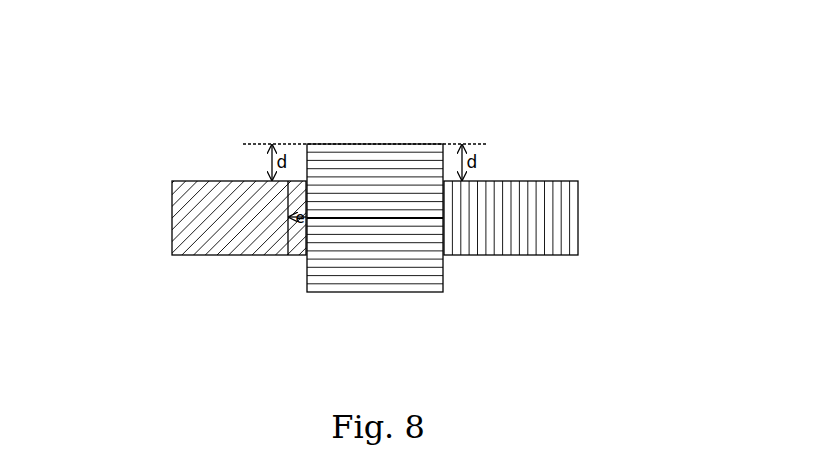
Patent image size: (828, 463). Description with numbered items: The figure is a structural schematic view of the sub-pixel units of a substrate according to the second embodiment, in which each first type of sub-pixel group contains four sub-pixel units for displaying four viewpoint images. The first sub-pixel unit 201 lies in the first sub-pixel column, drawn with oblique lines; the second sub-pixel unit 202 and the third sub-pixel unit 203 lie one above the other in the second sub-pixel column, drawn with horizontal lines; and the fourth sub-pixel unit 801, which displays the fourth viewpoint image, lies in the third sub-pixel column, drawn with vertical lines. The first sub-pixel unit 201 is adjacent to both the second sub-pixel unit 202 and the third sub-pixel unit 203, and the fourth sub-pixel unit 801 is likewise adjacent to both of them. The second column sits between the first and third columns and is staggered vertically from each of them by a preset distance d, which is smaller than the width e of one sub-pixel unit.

The first sub-pixel unit 201 is at (172, 222).
The second sub-pixel unit 202 is at (386, 144).
The third sub-pixel unit 203 is at (391, 293).
The fourth sub-pixel unit 801 is at (578, 214).